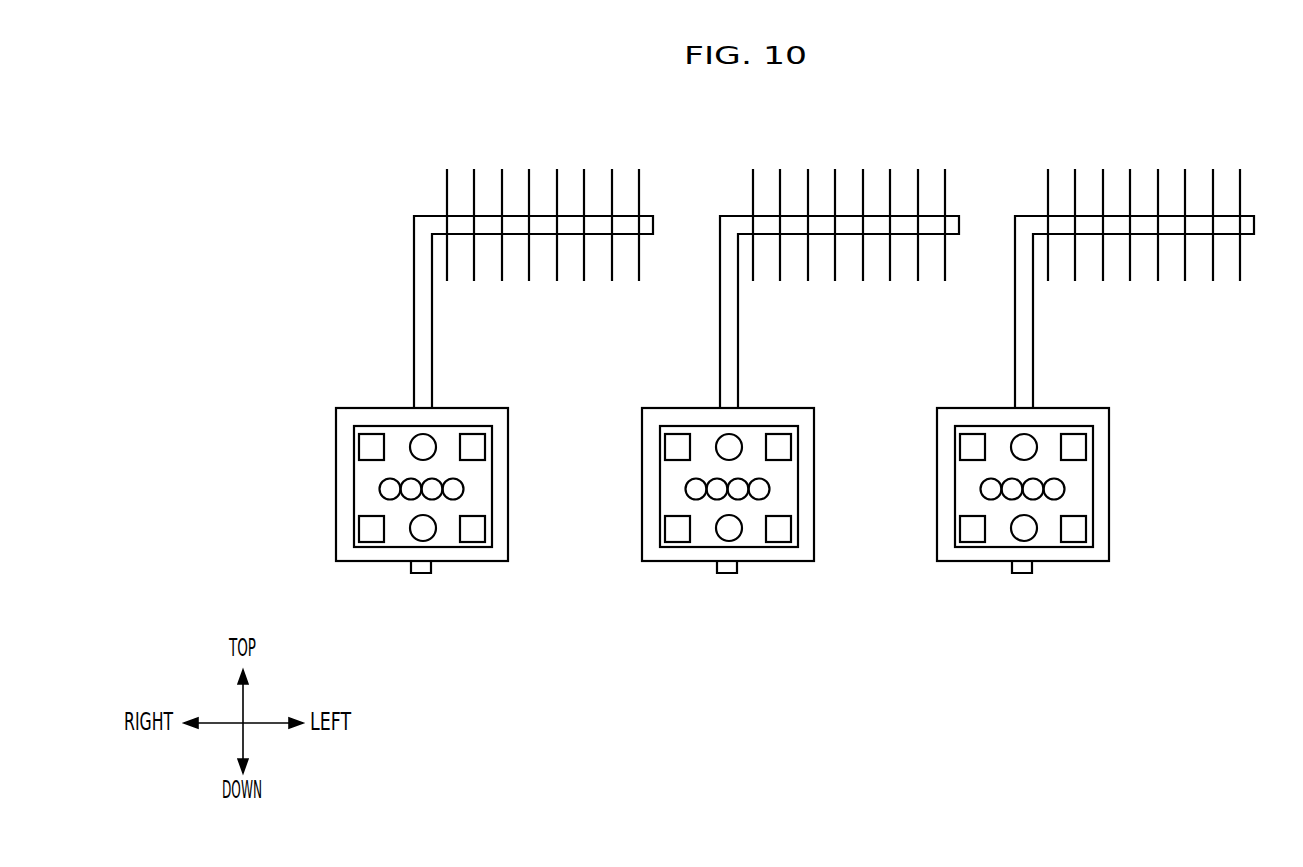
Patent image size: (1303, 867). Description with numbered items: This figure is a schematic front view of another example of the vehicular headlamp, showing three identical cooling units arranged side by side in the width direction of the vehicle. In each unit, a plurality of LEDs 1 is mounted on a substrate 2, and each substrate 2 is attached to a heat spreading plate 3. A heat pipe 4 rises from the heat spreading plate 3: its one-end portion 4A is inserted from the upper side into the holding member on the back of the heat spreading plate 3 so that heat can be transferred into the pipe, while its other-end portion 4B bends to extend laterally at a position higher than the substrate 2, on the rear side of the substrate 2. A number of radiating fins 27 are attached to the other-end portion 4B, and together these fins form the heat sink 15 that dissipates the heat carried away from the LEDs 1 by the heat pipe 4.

The LED 1 is at (464, 489).
The substrate 2 is at (392, 540).
The heat spreading plate 3 is at (342, 535).
The heat pipe 4 is at (414, 306).
The one-end portion 4A is at (428, 576).
The other-end portion 4B is at (567, 216).
The heat sink 15 is at (847, 238).
The radiating fins 27 is at (529, 176).